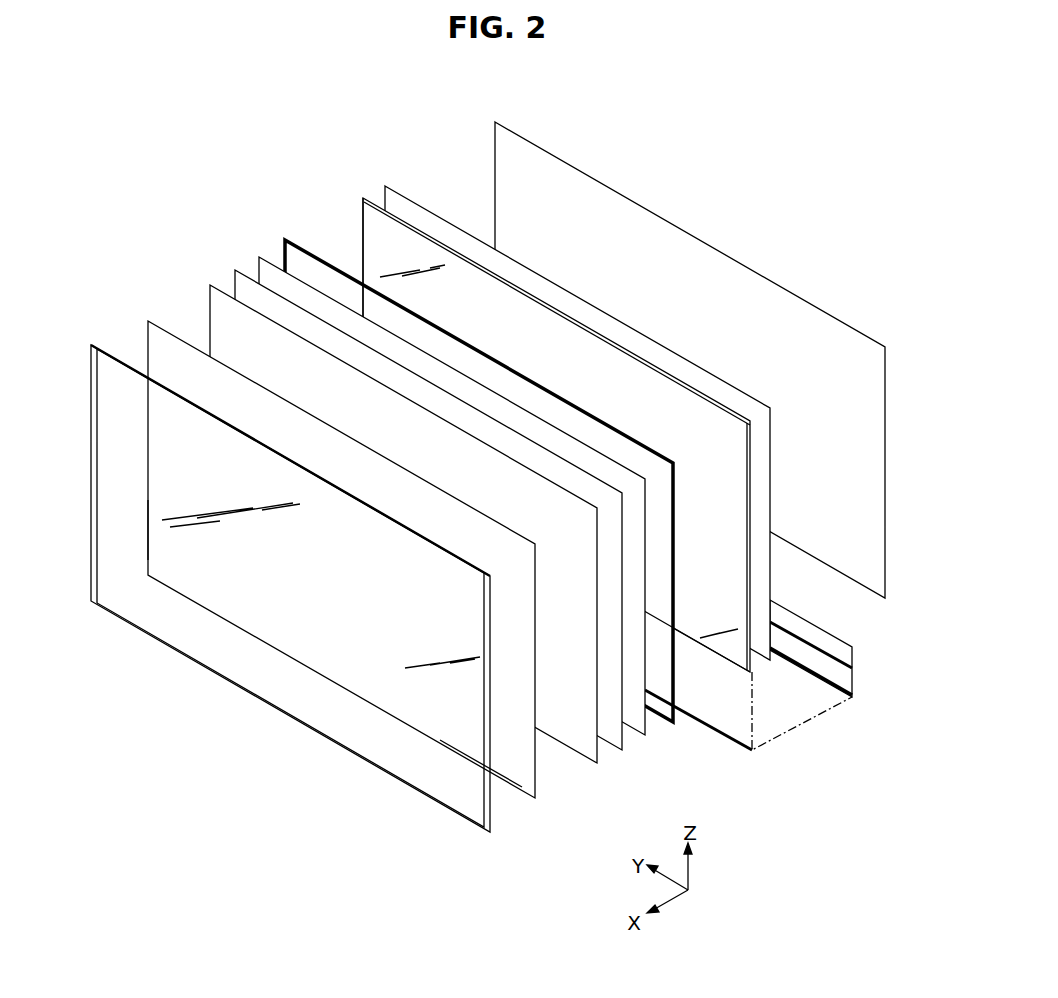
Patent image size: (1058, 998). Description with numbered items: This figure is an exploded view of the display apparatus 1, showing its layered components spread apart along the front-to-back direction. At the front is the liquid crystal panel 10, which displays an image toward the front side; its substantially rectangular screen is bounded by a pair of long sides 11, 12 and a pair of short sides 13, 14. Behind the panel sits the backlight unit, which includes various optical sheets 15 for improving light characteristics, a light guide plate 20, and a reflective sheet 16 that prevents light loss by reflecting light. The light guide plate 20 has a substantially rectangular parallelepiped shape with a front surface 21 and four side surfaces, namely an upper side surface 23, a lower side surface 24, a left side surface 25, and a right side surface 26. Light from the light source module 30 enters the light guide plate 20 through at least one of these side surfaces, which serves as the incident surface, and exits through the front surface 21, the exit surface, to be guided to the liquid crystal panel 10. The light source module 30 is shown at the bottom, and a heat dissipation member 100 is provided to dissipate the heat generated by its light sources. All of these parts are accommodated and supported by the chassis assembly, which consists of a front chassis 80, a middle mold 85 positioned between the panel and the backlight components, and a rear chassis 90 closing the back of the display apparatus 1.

The display apparatus 1 is at (168, 131).
The liquid crystal panel 10 is at (148, 320).
The long side 11 is at (182, 338).
The long side 12 is at (521, 790).
The short side 13 is at (536, 790).
The short side 14 is at (148, 533).
The optical sheets 15 is at (262, 265).
The reflective sheet 16 is at (396, 184).
The light guide plate 20 is at (360, 197).
The front surface 21 is at (518, 308).
The upper side surface 23 is at (612, 337).
The lower side surface 24 is at (726, 665).
The left side surface 25 is at (750, 567).
The right side surface 26 is at (362, 244).
The light source module 30 is at (740, 752).
The front chassis 80 is at (97, 344).
The middle mold 85 is at (285, 242).
The rear chassis 90 is at (652, 215).
The heat dissipation member 100 is at (862, 679).